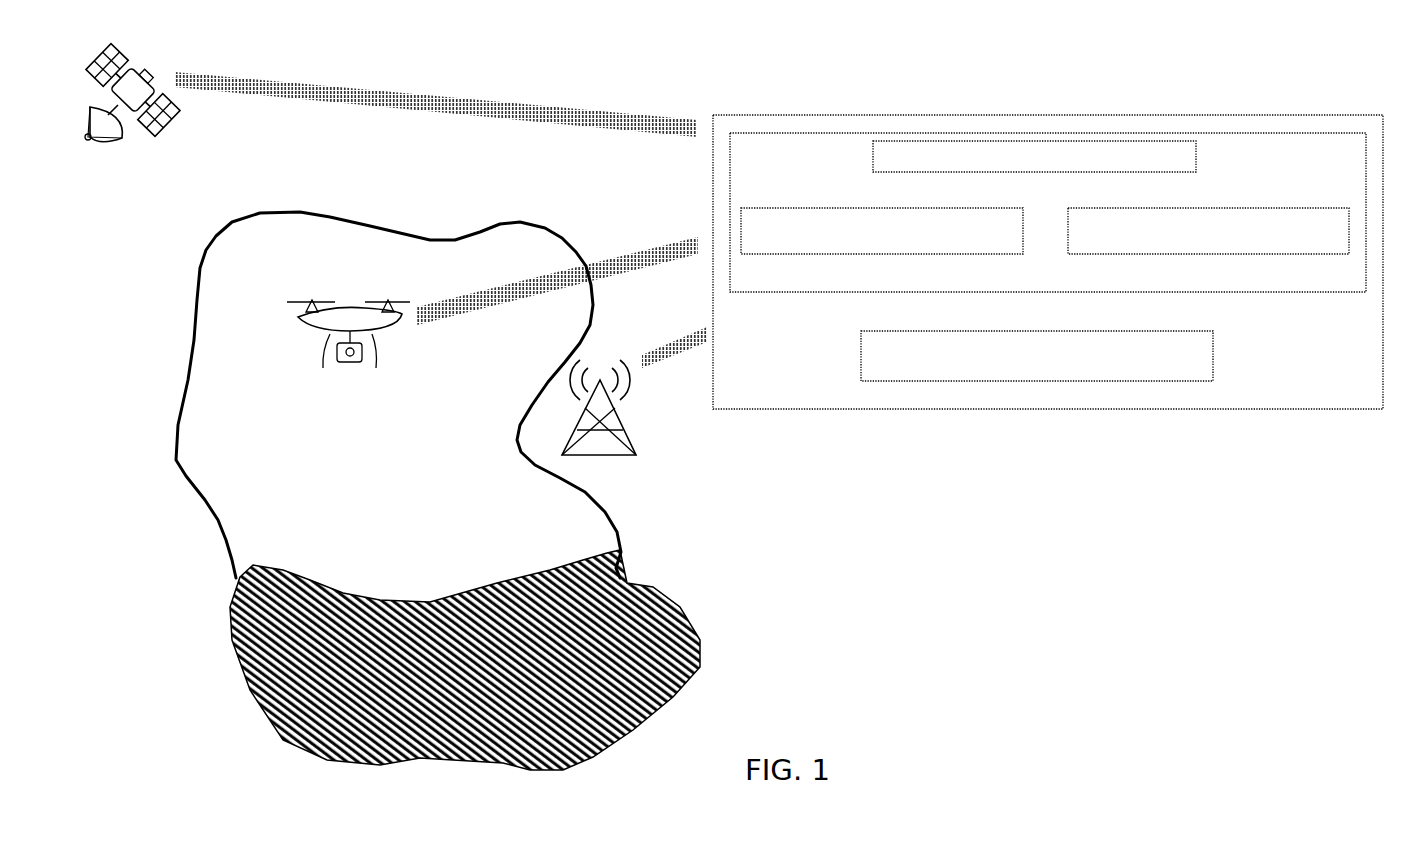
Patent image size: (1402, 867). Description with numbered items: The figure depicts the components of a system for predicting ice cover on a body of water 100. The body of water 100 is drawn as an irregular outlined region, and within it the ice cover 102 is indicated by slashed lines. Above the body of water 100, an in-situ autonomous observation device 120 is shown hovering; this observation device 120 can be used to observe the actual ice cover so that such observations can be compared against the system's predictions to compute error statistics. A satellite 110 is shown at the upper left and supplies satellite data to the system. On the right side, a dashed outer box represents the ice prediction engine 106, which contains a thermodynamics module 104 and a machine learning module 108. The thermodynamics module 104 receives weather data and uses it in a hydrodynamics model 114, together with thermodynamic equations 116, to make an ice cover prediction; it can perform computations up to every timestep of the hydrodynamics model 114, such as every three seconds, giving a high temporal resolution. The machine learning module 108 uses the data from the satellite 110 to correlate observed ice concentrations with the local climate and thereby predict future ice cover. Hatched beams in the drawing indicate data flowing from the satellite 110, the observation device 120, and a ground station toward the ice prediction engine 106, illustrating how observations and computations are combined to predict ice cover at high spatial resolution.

The body of water 100 is at (362, 245).
The ice cover 102 is at (238, 604).
The thermodynamics module 104 is at (730, 188).
The ice prediction engine 106 is at (855, 410).
The machine learning module 108 is at (862, 349).
The satellite 110 is at (172, 127).
The hydrodynamics model 114 is at (865, 254).
The thermodynamic equations 116 is at (1183, 253).
The in-situ autonomous observation device 120 is at (298, 316).